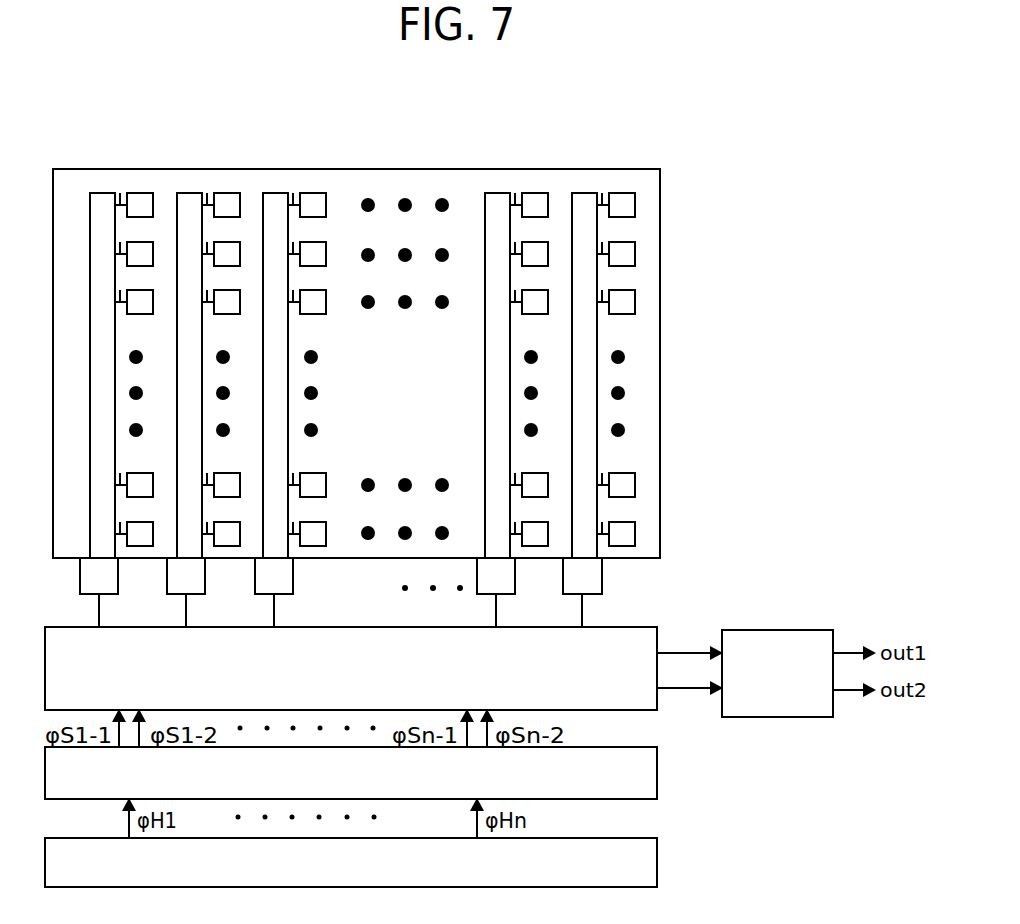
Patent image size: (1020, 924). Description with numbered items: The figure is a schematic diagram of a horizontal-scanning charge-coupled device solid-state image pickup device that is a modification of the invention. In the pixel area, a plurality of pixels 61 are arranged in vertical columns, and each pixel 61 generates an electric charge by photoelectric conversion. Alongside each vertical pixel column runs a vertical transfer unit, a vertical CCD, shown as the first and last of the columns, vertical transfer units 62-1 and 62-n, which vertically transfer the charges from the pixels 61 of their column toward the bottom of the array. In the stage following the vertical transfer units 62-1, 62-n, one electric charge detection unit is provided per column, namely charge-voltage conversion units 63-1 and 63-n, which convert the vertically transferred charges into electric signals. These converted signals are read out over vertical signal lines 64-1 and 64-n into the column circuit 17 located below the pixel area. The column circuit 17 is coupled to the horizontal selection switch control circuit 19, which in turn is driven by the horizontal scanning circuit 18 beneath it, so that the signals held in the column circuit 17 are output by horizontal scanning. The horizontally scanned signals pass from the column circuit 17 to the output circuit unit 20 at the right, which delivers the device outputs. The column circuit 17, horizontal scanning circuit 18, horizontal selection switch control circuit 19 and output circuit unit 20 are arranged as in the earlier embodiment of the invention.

The pixel 61 is at (232, 193).
The vertical transfer unit 62-1 is at (107, 193).
The vertical transfer unit 62-n is at (587, 193).
The electric charge detection unit 63-1 is at (80, 568).
The electric charge detection unit 63-n is at (602, 572).
The vertical signal line 64-1 is at (99, 607).
The vertical signal line 64-n is at (582, 612).
The column circuit 17 is at (657, 706).
The horizontal scanning circuit 18 is at (657, 845).
The horizontal selection switch control circuit 19 is at (657, 760).
The output circuit unit 20 is at (793, 717).